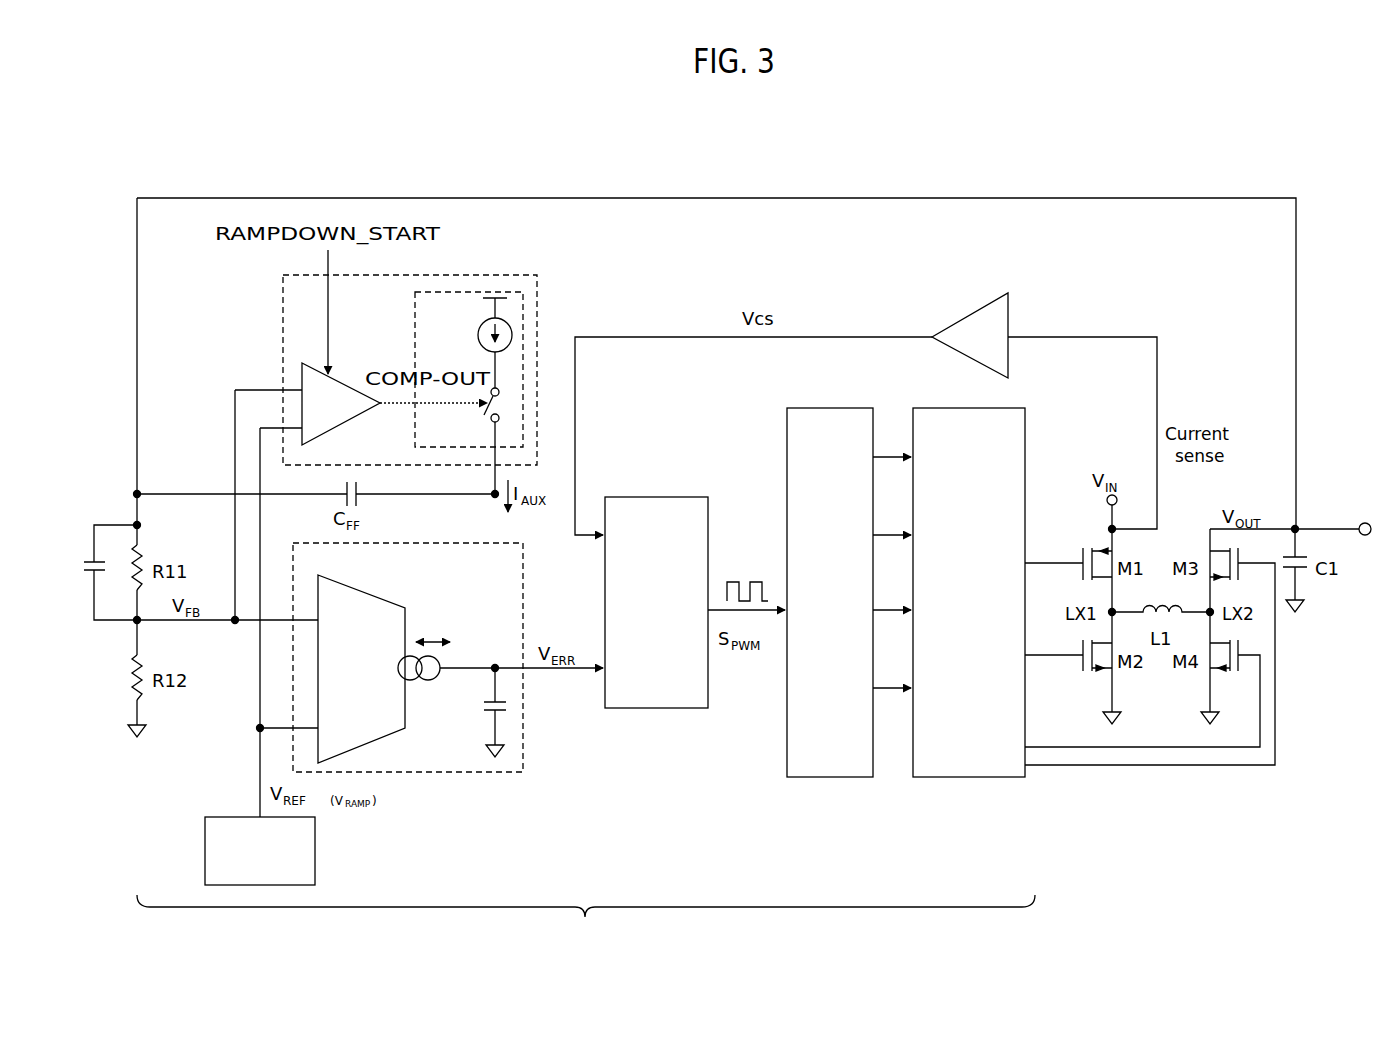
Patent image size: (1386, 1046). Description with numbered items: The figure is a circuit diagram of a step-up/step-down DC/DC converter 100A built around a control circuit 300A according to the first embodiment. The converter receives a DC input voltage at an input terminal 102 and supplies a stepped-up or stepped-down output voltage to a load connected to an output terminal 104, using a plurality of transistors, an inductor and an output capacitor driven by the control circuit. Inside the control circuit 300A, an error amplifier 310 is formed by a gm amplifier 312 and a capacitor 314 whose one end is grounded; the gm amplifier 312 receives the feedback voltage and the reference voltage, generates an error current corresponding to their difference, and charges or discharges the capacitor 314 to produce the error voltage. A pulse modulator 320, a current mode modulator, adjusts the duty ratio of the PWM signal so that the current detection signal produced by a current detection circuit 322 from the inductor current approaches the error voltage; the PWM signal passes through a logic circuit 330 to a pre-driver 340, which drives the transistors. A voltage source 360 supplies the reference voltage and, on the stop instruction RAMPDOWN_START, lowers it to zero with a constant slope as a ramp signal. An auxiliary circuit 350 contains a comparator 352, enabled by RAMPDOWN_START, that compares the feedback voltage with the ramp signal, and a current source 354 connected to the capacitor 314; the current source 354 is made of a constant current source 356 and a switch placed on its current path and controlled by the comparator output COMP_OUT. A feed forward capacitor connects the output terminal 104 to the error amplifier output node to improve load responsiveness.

The DC/DC converter 100A is at (1262, 183).
The input terminal 102 is at (1106, 499).
The output terminal 104 is at (1366, 520).
The control circuit 300A is at (586, 927).
The error amplifier 310 is at (478, 773).
The gm amplifier 312 is at (370, 603).
The capacitor 314 is at (475, 707).
The pulse modulator 320 is at (660, 708).
The current detection circuit 322 is at (970, 322).
The logic circuit 330 is at (827, 778).
The pre-driver 340 is at (967, 778).
The auxiliary circuit 350 is at (541, 303).
The comparator 352 is at (343, 372).
The current source 354 is at (412, 428).
The constant current source 356 is at (476, 337).
The voltage source 360 is at (315, 843).